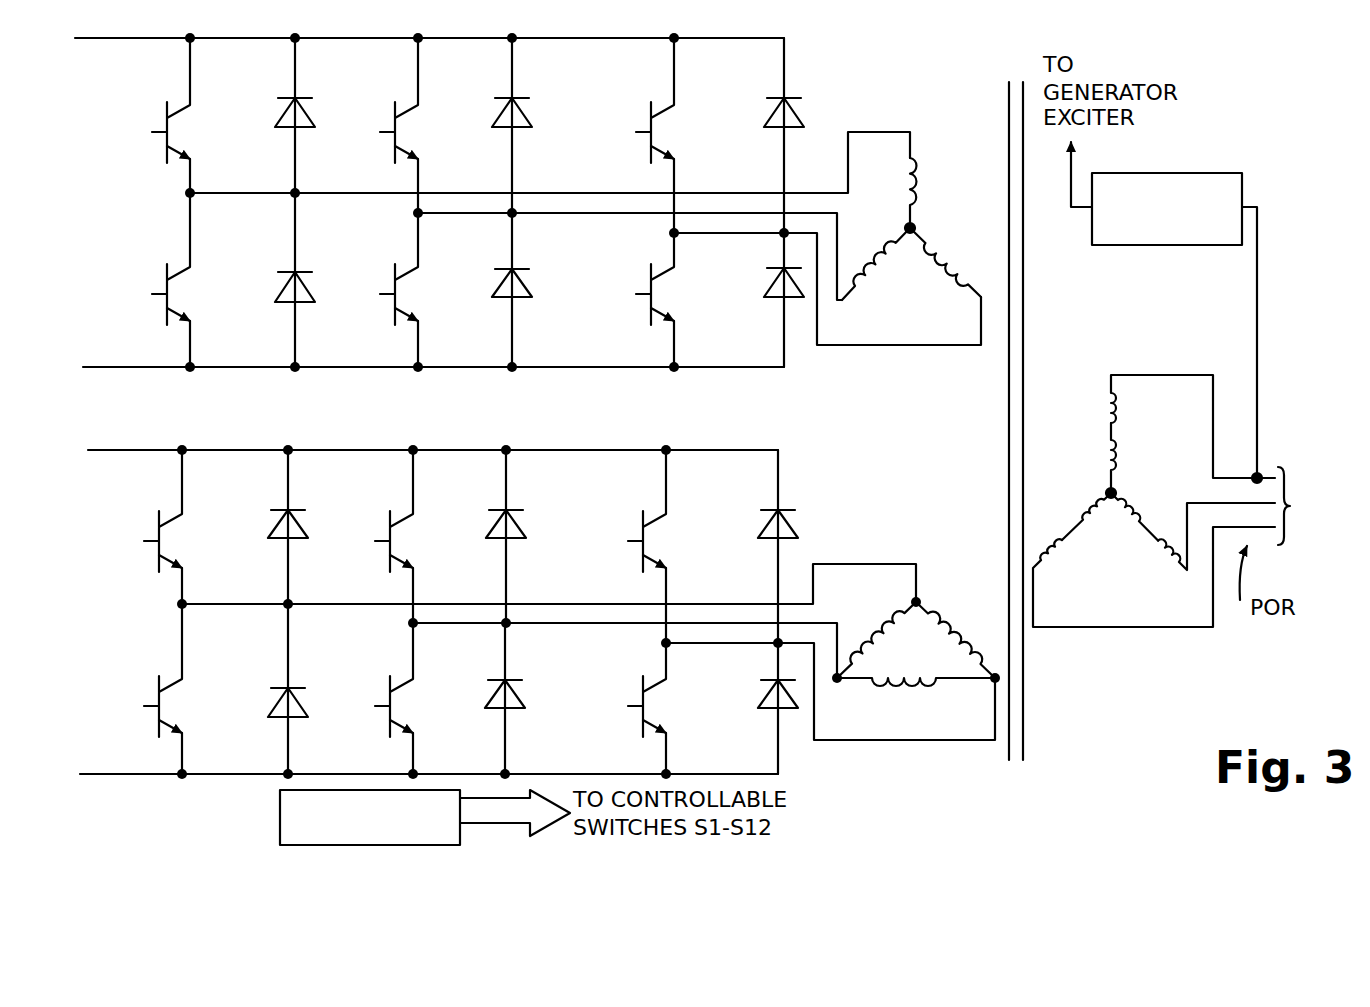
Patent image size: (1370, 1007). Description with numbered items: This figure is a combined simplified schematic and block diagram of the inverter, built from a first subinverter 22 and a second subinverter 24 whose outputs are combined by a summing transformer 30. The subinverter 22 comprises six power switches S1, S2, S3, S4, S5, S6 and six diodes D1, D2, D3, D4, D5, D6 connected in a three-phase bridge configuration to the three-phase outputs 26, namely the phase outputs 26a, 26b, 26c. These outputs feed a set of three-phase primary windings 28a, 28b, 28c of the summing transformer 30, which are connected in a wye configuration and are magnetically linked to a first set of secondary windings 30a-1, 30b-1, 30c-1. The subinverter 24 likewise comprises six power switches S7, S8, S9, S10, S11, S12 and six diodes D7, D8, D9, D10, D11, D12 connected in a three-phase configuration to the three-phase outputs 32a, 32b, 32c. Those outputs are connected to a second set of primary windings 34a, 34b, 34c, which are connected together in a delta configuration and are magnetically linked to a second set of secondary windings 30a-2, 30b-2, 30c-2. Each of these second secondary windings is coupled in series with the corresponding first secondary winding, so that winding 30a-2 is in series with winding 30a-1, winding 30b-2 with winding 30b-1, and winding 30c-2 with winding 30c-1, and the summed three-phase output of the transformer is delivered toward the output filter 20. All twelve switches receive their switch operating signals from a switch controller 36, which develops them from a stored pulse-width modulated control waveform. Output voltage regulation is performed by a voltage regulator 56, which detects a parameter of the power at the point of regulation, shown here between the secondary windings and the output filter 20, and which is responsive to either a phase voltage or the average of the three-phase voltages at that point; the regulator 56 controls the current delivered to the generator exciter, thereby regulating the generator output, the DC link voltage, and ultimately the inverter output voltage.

The first subinverter 22 is at (654, 33).
The second subinverter 24 is at (602, 446).
The three-phase outputs 26 is at (965, 112).
The three-phase output 26a is at (186, 193).
The three-phase output 26b is at (414, 214).
The three-phase output 26c is at (779, 240).
The primary winding 28a is at (921, 185).
The primary winding 28b is at (869, 268).
The primary winding 28c is at (941, 255).
The summing transformer 30 is at (982, 467).
The secondary winding 30a-1 is at (1118, 409).
The secondary winding 30a-2 is at (1118, 456).
The secondary winding 30b-1 is at (1170, 580).
The secondary winding 30b-2 is at (1134, 510).
The secondary winding 30c-1 is at (1046, 552).
The secondary winding 30c-2 is at (1098, 460).
The three-phase output 32a is at (178, 604).
The three-phase output 32b is at (410, 623).
The three-phase output 32c is at (662, 643).
The primary winding 34a is at (878, 620).
The primary winding 34b is at (896, 688).
The primary winding 34c is at (931, 615).
The switch controller 36 is at (280, 818).
The voltage regulator 56 is at (1222, 177).
The output filter 20 is at (1321, 512).
The power switch S1 is at (184, 104).
The power switch S2 is at (184, 268).
The power switch S3 is at (411, 104).
The power switch S4 is at (394, 275).
The power switch S5 is at (667, 104).
The power switch S6 is at (656, 318).
The power switch S7 is at (177, 516).
The power switch S8 is at (176, 682).
The power switch S9 is at (407, 516).
The power switch S10 is at (406, 690).
The power switch S11 is at (668, 522).
The power switch S12 is at (646, 735).
The diode D1 is at (289, 97).
The diode D2 is at (289, 272).
The diode D3 is at (506, 97).
The diode D4 is at (498, 289).
The diode D5 is at (779, 97).
The diode D6 is at (776, 302).
The diode D7 is at (298, 536).
The diode D8 is at (283, 687).
The diode D9 is at (514, 531).
The diode D10 is at (497, 704).
The diode D11 is at (789, 507).
The diode D12 is at (773, 711).